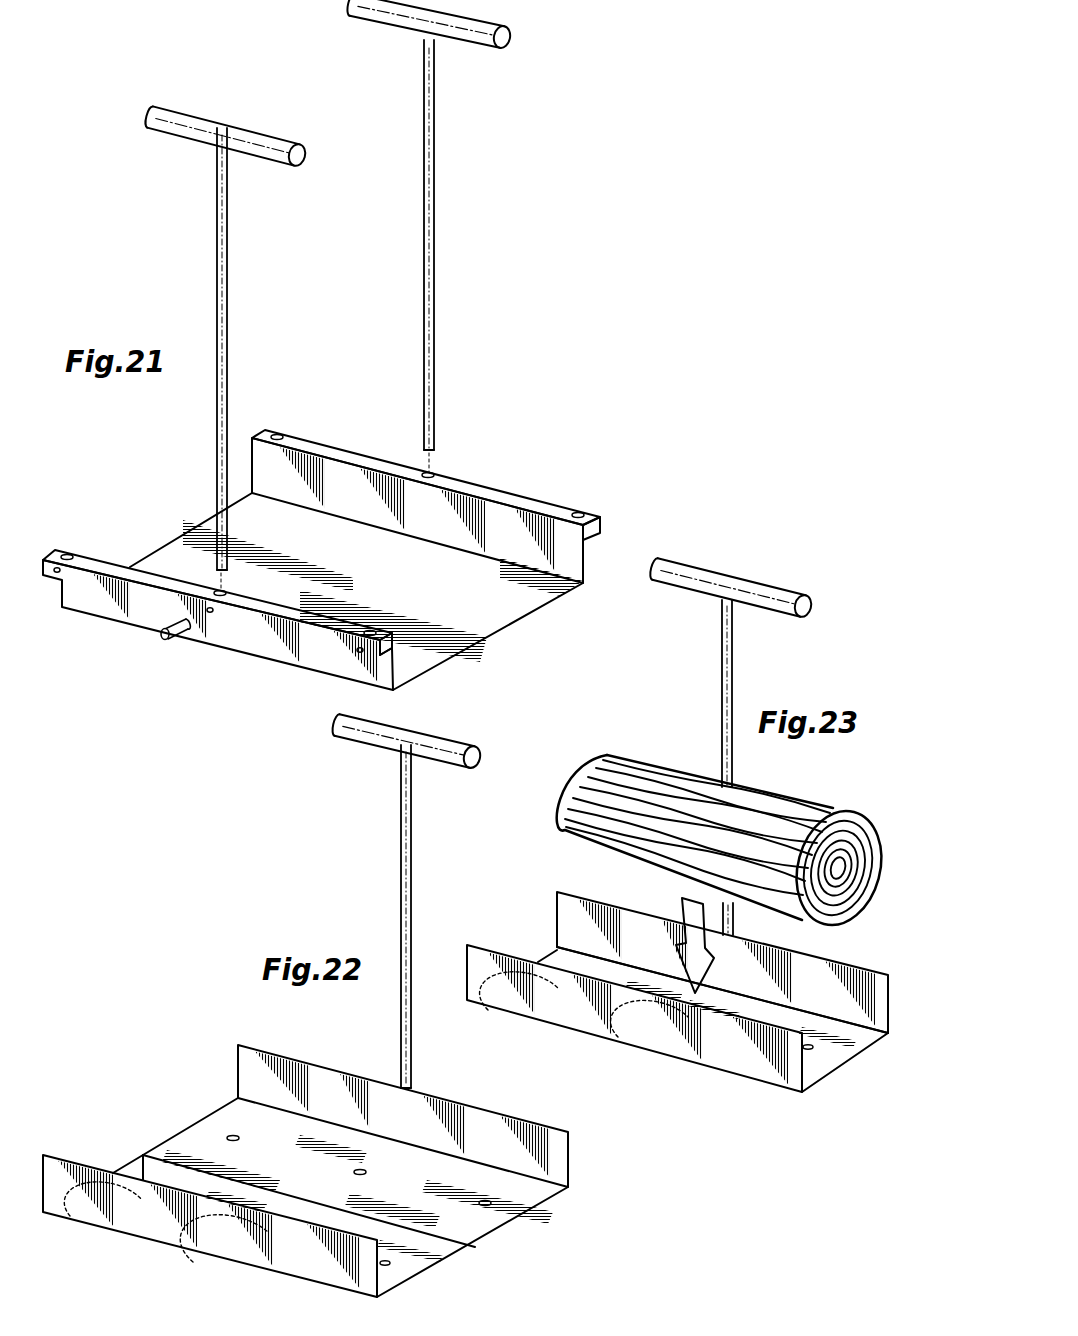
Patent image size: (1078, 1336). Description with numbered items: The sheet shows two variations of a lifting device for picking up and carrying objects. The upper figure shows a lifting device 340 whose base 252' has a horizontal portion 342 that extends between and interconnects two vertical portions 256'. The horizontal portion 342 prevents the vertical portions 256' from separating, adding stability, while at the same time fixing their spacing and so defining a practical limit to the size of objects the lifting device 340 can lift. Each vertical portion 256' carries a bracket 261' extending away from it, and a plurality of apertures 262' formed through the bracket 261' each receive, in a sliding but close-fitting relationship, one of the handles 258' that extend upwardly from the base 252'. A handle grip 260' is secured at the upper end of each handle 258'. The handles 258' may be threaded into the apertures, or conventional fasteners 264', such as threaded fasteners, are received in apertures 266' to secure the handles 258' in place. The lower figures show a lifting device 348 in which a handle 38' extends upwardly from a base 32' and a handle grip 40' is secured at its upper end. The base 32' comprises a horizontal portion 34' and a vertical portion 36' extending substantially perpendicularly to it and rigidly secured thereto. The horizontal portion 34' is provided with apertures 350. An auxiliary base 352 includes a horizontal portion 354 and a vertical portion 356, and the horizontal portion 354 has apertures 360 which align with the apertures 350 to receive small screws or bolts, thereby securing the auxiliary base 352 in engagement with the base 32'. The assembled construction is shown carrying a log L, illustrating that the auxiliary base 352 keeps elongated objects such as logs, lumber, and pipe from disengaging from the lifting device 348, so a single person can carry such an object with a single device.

In FIG. 21, the lifting device 340 is at (186, 262).
In FIG. 21, the handle grip 260' is at (305, 87).
In FIG. 21, the handle 258' is at (375, 315).
In FIG. 21, the base 252' is at (321, 544).
In FIG. 21, the bracket 261' is at (321, 529).
In FIG. 21, the vertical portion 256' is at (313, 586).
In FIG. 21, the aperture 262' is at (316, 503).
In FIG. 21, the aperture 266' is at (205, 636).
In FIG. 21, the fastener 264' is at (134, 654).
In FIG. 21, the horizontal portion 342 is at (431, 589).
In FIG. 22, the lifting device 348 is at (390, 901).
In FIG. 23, the lifting device 348 is at (719, 713).
In FIG. 22, the handle grip 40' is at (408, 772).
In FIG. 23, the handle grip 40' is at (731, 555).
In FIG. 22, the handle 38' is at (369, 916).
In FIG. 23, the handle 38' is at (689, 767).
In FIG. 22, the base 32' is at (340, 1145).
In FIG. 23, the base 32' is at (686, 970).
In FIG. 22, the vertical portion 36' is at (364, 1110).
In FIG. 23, the vertical portion 36' is at (686, 959).
In FIG. 22, the horizontal portion 34' is at (340, 1186).
In FIG. 22, the auxiliary base 352 is at (259, 1185).
In FIG. 23, the auxiliary base 352 is at (659, 996).
In FIG. 22, the horizontal portion 354 is at (138, 1160).
In FIG. 23, the horizontal portion 354 is at (550, 958).
In FIG. 22, the vertical portion 356 is at (172, 1215).
In FIG. 23, the vertical portion 356 is at (560, 1010).
In FIG. 22, the aperture 350 is at (234, 1135).
In FIG. 22, the aperture 360 is at (402, 1213).
In FIG. 23, the aperture 360 is at (828, 998).
In FIG. 23, the log L is at (607, 753).